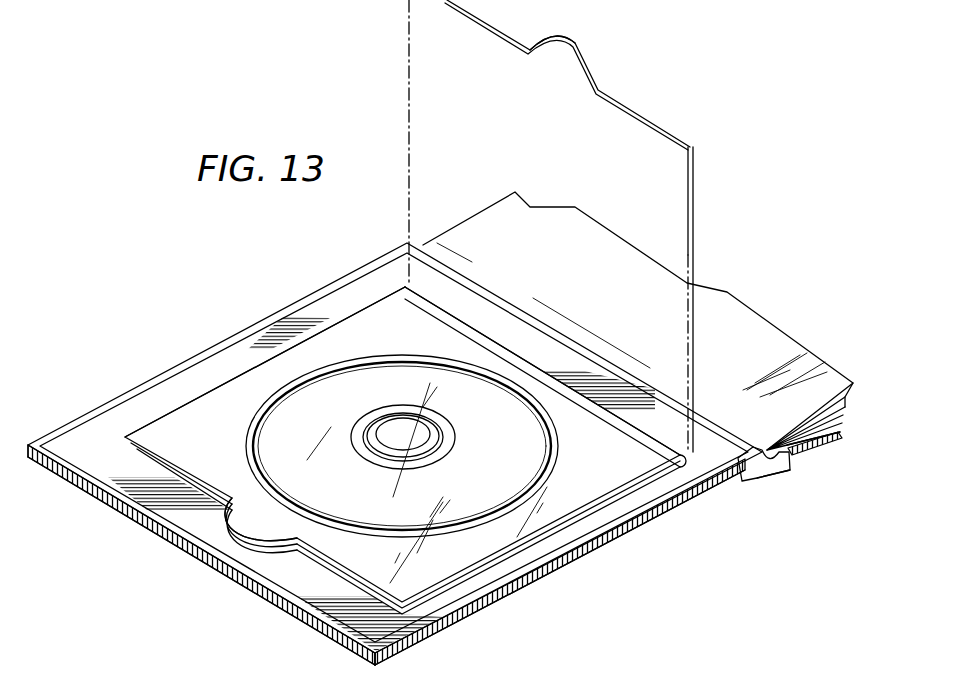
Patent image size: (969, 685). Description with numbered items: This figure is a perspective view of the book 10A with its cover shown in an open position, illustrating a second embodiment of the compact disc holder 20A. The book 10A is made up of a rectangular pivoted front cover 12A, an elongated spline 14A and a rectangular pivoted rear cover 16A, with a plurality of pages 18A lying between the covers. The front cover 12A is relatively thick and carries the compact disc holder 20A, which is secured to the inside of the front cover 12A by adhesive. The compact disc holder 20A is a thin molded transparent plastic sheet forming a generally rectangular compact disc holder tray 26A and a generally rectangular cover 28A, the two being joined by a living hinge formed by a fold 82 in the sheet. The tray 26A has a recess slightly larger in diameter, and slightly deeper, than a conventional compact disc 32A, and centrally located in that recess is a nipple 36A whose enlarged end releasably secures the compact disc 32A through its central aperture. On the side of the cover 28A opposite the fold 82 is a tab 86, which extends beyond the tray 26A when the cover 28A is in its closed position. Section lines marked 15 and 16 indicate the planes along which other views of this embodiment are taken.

The book 10A is at (308, 620).
The front cover 12A is at (68, 474).
The spline 14A is at (765, 472).
The section line 15 is at (240, 334).
The section line 16 is at (123, 575).
The rear cover 16A is at (838, 448).
The pages 18A is at (783, 360).
The compact disc holder 20A is at (182, 412).
The compact disc holder tray 26A is at (352, 326).
The cover 28A is at (692, 254).
The compact disc 32A is at (508, 456).
The nipple 36A is at (382, 427).
The fold 82 is at (498, 340).
The tab 86 is at (262, 550).